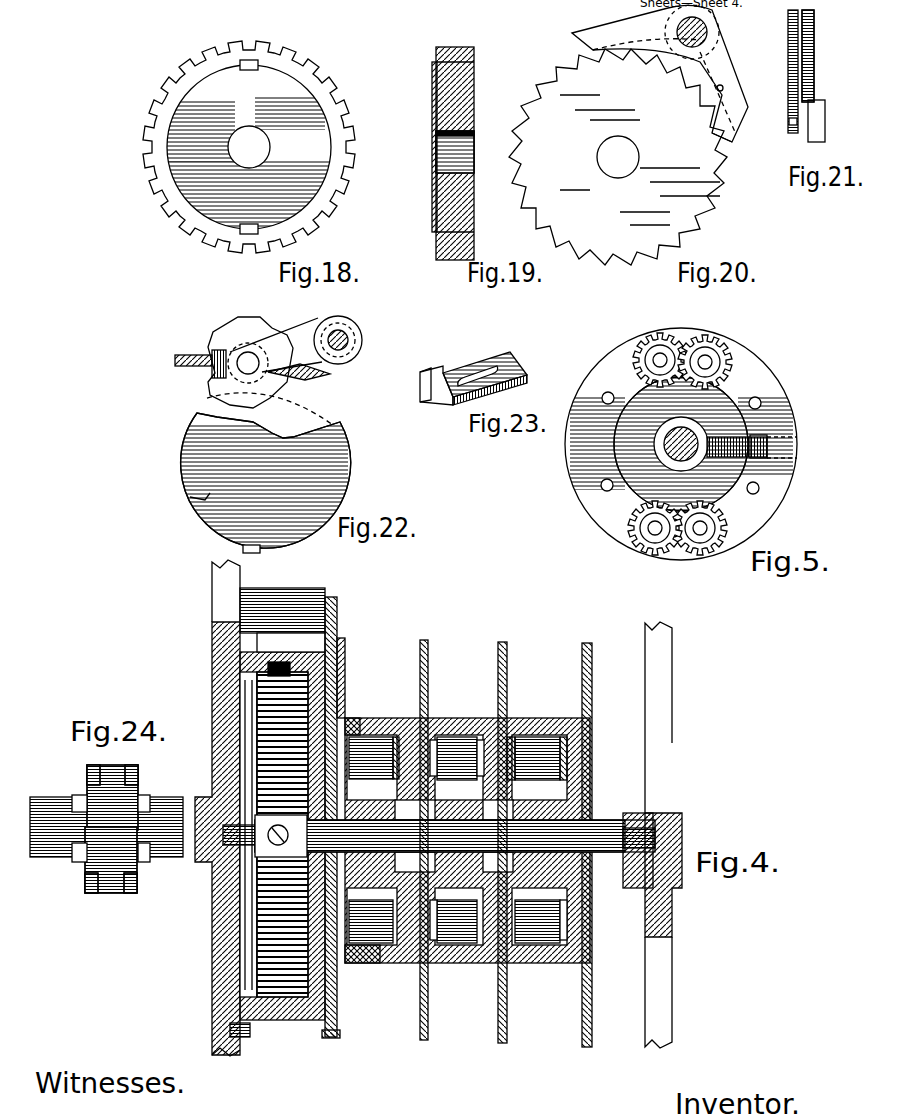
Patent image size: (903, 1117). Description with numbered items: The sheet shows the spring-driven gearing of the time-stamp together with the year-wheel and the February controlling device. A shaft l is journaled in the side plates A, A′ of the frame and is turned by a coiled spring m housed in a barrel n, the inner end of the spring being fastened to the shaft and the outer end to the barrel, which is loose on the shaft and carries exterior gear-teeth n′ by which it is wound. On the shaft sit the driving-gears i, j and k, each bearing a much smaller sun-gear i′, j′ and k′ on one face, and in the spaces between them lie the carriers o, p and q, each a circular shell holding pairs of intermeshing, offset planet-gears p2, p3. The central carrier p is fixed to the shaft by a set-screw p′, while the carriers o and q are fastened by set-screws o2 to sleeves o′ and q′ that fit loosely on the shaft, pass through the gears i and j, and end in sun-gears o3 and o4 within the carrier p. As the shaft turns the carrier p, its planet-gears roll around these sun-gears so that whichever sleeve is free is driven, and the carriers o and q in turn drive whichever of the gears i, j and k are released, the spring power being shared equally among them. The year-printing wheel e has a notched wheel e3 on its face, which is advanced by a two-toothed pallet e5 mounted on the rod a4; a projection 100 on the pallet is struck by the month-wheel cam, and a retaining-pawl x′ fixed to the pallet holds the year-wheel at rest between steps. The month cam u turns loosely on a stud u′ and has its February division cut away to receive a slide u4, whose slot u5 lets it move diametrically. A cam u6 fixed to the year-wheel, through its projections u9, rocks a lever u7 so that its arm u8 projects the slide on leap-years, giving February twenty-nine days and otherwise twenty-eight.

In FIG. 18, the year-printing wheel e is at (324, 72).
In FIG. 19, the year-printing wheel e is at (455, 47).
In FIG. 20, the year-printing wheel e is at (560, 65).
In FIG. 19, the notched wheel e3 is at (476, 206).
In FIG. 20, the notched wheel e3 is at (597, 170).
In FIG. 20, the pallet e5 is at (613, 25).
In FIG. 21, the pallet e5 is at (822, 73).
In FIG. 18, the cam u6 is at (265, 147).
In FIG. 19, the cam u6 is at (432, 206).
In FIG. 22, the cam u6 is at (342, 468).
In FIG. 20, the rod or bar a4 is at (704, 35).
In FIG. 20, the retaining-pawl x′ is at (728, 92).
In FIG. 20, the projection 100 is at (735, 138).
In FIG. 22, the cam u is at (265, 332).
In FIG. 22, the stud u′ is at (248, 352).
In FIG. 22, the slide u4 is at (208, 366).
In FIG. 23, the slide u4 is at (430, 398).
In FIG. 22, the slot u5 is at (225, 350).
In FIG. 22, the lever u7 is at (362, 355).
In FIG. 22, the arm u8 is at (318, 382).
In FIG. 22, the projections u9 is at (188, 498).
In FIG. 5, the carrier o is at (762, 357).
In FIG. 4, the carrier o is at (348, 722).
In FIG. 5, the set-screws o2 is at (723, 435).
In FIG. 5, the sleeve o′ is at (694, 429).
In FIG. 4, the sleeve o′ is at (362, 963).
In FIG. 5, the key v is at (694, 452).
In FIG. 5, the planet-gear p2 is at (710, 350).
In FIG. 24, the planet-gear p2 is at (110, 786).
In FIG. 4, the planet-gear p2 is at (377, 738).
In FIG. 5, the planet-gear p3 is at (662, 352).
In FIG. 24, the planet-gear p3 is at (118, 875).
In FIG. 4, the planet-gear p3 is at (387, 963).
In FIG. 24, the sun-gear o3 is at (87, 897).
In FIG. 4, the sun-gear o3 is at (436, 735).
In FIG. 24, the sun-gear o4 is at (137, 892).
In FIG. 4, the sun-gear o4 is at (479, 735).
In FIG. 4, the side plate A is at (212, 965).
In FIG. 4, the side plate A′ is at (663, 985).
In FIG. 4, the barrel n is at (282, 654).
In FIG. 4, the gear-teeth n′ is at (246, 642).
In FIG. 4, the driving-gear i is at (424, 640).
In FIG. 4, the sun-gear i′ is at (334, 598).
In FIG. 4, the driving-gear j is at (503, 642).
In FIG. 4, the sun-gear j′ is at (520, 735).
In FIG. 4, the driving-gear k is at (339, 637).
In FIG. 4, the sun-gear k′ is at (396, 765).
In FIG. 4, the coiled spring m is at (340, 683).
In FIG. 4, the carrier p is at (446, 735).
In FIG. 4, the set-screw p′ is at (470, 917).
In FIG. 4, the carrier q is at (548, 735).
In FIG. 4, the sleeve q′ is at (543, 963).
In FIG. 4, the shaft l is at (607, 860).